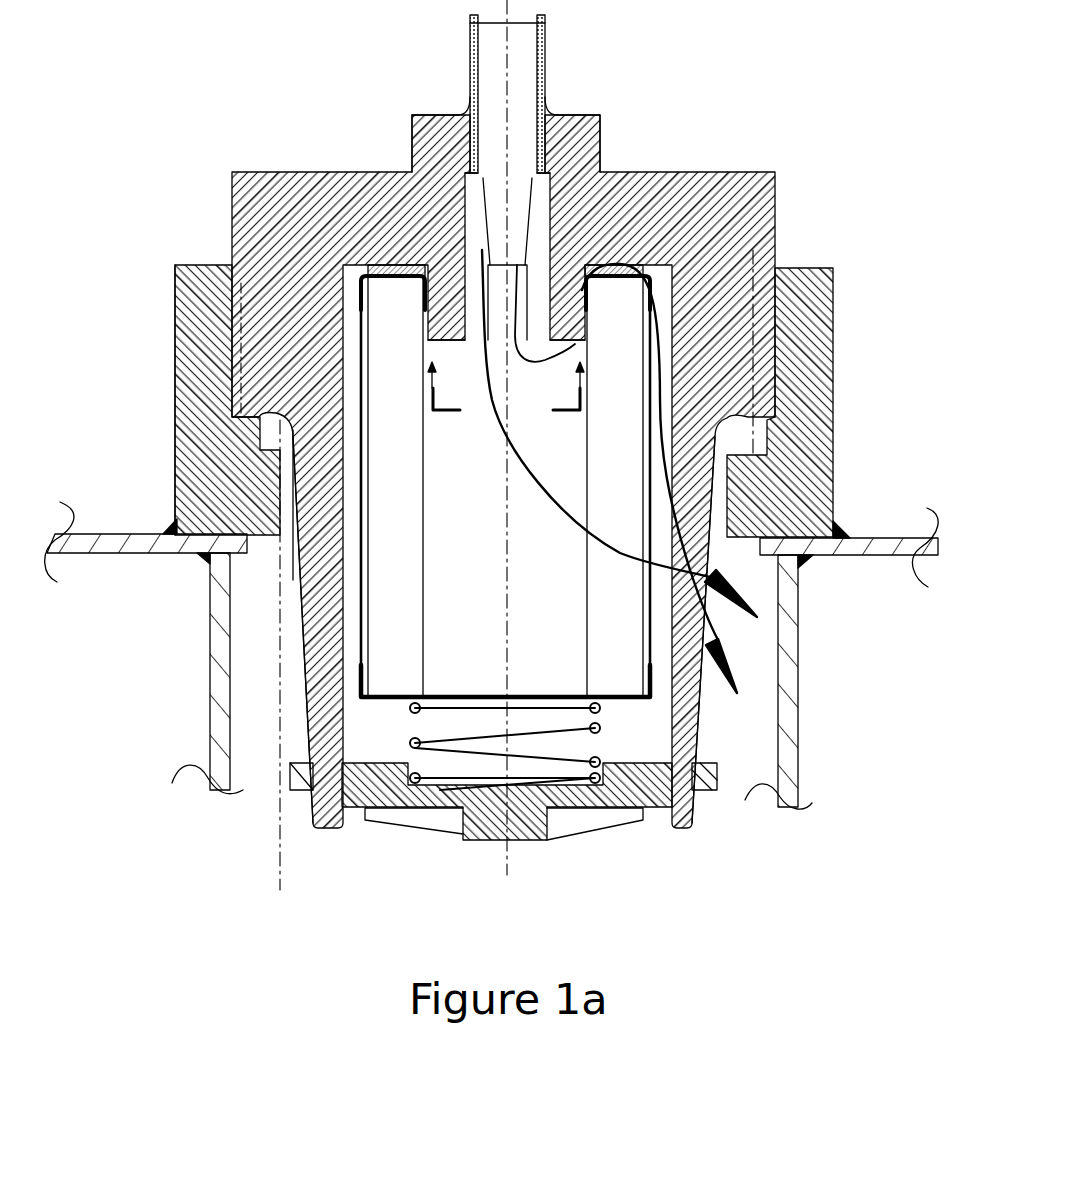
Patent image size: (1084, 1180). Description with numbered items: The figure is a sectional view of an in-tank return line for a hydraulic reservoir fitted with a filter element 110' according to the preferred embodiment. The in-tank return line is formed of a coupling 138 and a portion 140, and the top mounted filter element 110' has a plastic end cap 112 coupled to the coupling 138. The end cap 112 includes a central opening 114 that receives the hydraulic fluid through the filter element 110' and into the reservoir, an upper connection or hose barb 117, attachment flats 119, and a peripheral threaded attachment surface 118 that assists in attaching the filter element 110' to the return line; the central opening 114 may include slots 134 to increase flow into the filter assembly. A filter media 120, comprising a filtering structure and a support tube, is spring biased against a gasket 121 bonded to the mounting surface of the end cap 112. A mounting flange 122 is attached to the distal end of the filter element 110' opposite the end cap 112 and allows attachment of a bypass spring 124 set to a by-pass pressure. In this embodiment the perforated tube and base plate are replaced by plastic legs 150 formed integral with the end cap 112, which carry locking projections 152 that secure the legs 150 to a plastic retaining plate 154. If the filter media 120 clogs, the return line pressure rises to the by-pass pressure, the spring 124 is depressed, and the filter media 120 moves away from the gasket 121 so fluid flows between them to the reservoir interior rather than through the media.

The filter element 110' is at (491, 463).
The end cap 112 is at (252, 172).
The central opening 114 is at (520, 155).
The hose barb 117 is at (471, 64).
The peripheral threaded attachment surface 118 is at (232, 258).
The attachment flats 119 is at (599, 143).
The filter media 120 is at (585, 566).
The gasket 121 is at (388, 267).
The mounting flange 122 is at (528, 693).
The bypass spring 124 is at (472, 780).
The slots 134 is at (502, 333).
The coupling 138 is at (175, 444).
The portion 140 is at (215, 668).
The plastic legs 150 is at (317, 693).
The locking projections 152 is at (697, 817).
The plastic retaining plate 154 is at (627, 810).